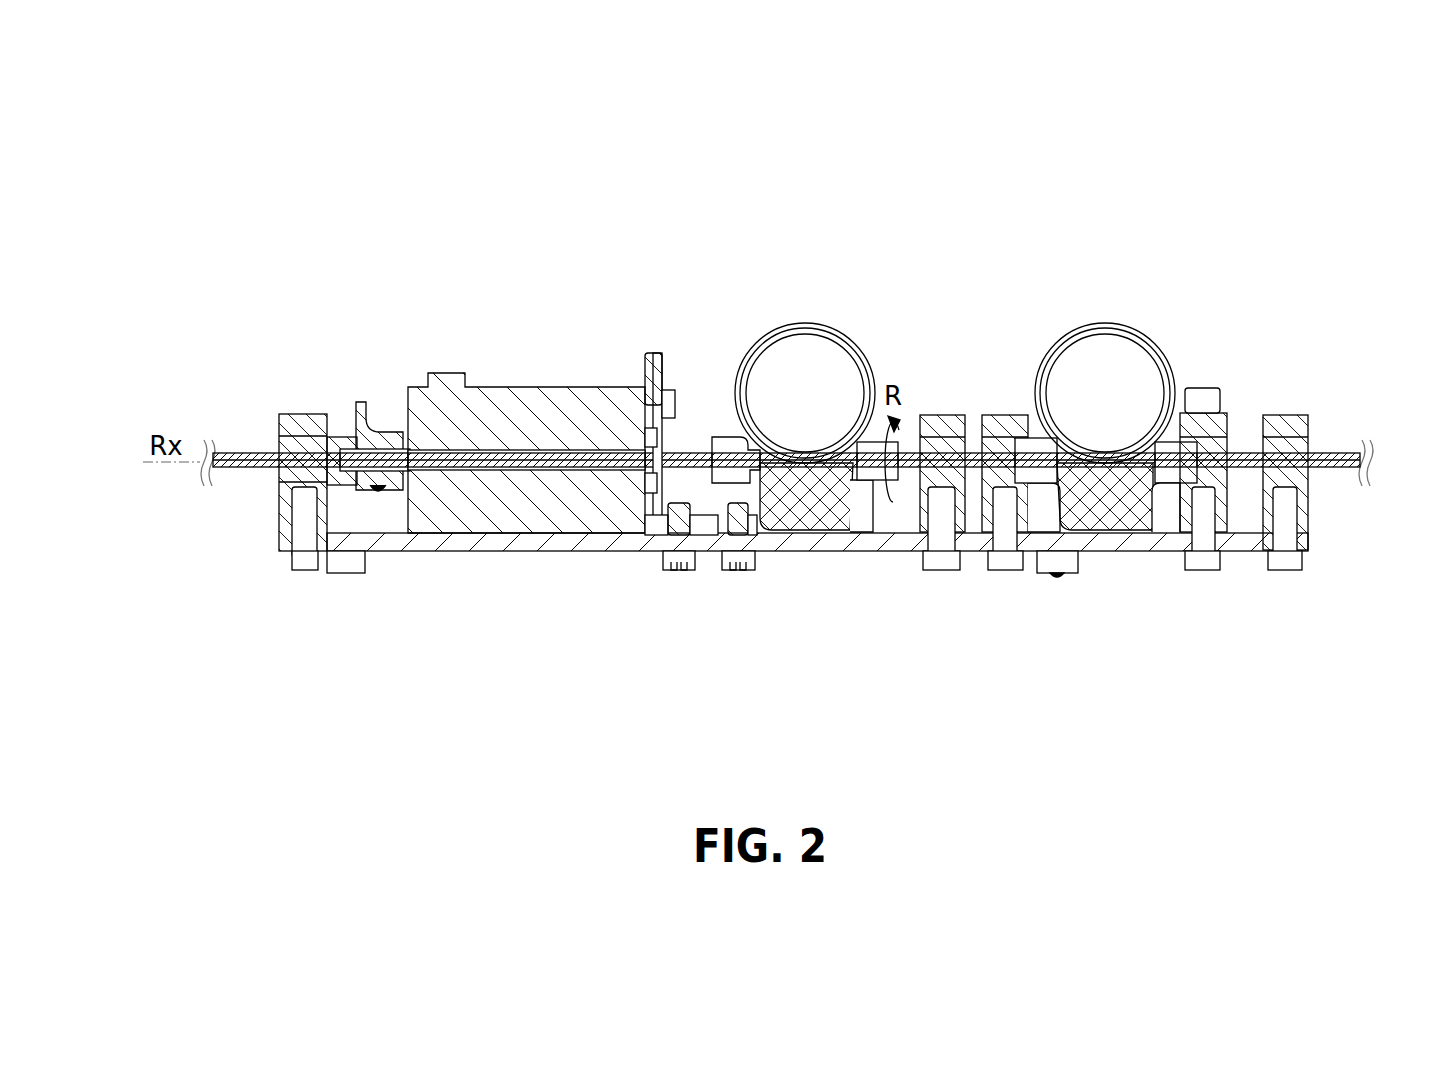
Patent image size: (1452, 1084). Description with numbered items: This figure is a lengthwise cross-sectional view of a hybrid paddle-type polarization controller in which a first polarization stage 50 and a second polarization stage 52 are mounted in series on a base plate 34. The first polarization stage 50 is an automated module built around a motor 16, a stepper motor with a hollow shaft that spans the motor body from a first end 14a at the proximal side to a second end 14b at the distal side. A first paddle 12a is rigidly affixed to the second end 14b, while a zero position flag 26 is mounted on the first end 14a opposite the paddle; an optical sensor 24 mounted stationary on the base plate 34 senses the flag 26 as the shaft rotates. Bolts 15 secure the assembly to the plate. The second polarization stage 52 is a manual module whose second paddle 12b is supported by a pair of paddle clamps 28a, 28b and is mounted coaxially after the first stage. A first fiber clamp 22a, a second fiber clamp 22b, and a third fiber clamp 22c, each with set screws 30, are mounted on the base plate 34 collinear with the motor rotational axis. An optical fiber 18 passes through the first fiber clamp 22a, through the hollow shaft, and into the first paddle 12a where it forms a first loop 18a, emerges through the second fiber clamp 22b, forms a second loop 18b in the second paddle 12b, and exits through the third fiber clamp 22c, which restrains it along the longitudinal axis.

The first paddle 12a is at (837, 457).
The second paddle 12b is at (1148, 452).
The first end 14a is at (388, 447).
The second end 14b is at (690, 477).
The bolts 15 is at (673, 547).
The motor 16 is at (535, 390).
The optical fiber 18 is at (230, 470).
The first loop 18a is at (850, 482).
The second loop 18b is at (1158, 500).
The first fiber clamp 22a is at (295, 413).
The second fiber clamp 22b is at (935, 413).
The third fiber clamp 22c is at (1287, 413).
The optical sensor 24 is at (347, 440).
The zero position flag 26 is at (370, 417).
The paddle clamp 28a is at (1015, 415).
The paddle clamp 28b is at (1282, 562).
The set screws 30 is at (1200, 390).
The base plate 34 is at (430, 551).
The first polarization stage 50 is at (628, 648).
The second polarization stage 52 is at (1103, 642).